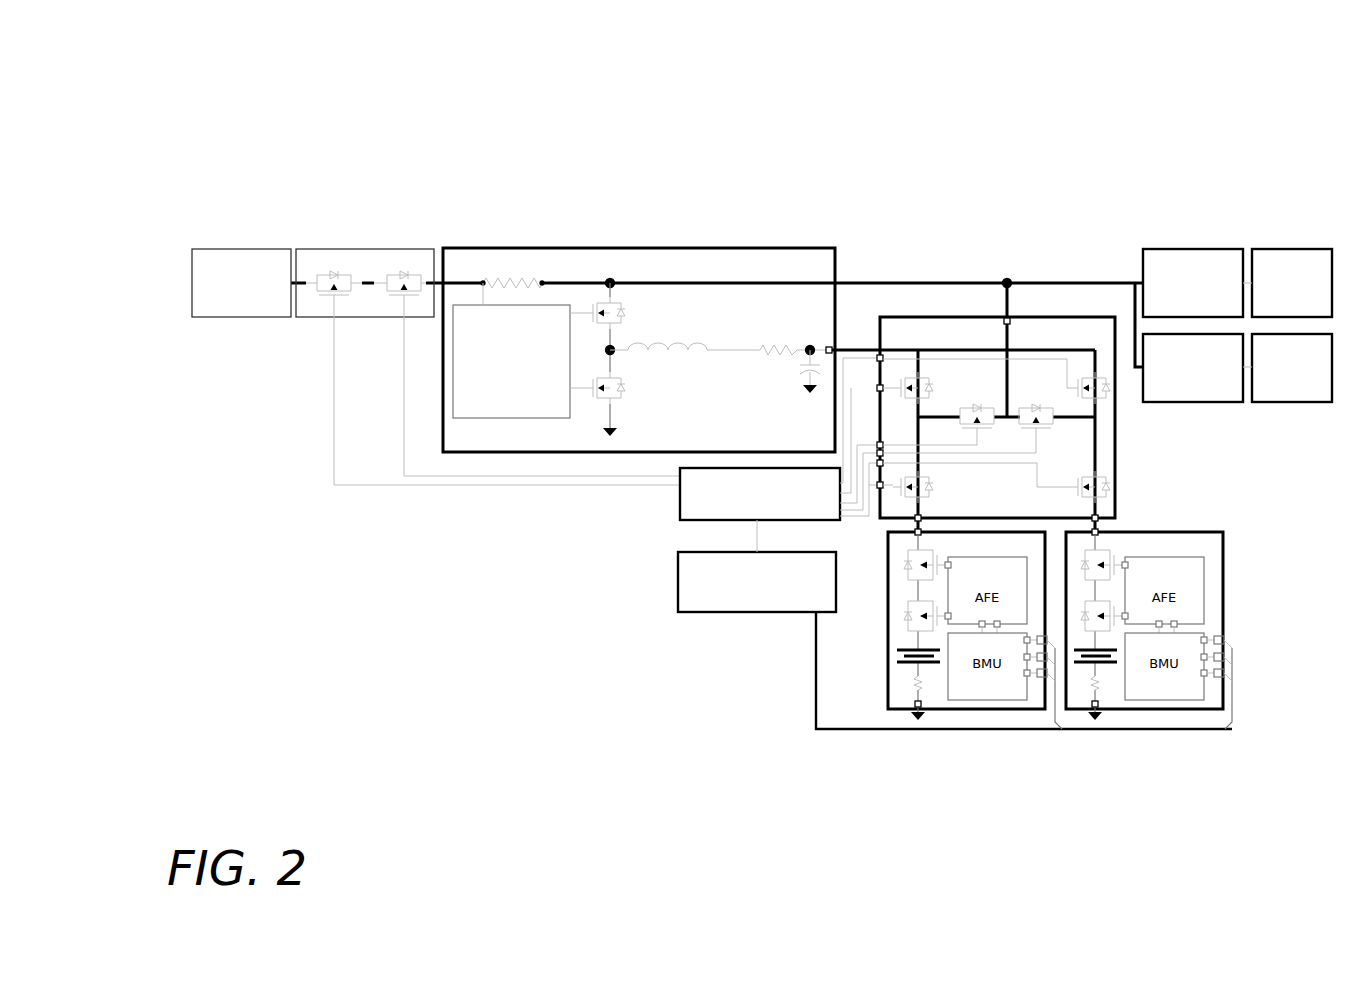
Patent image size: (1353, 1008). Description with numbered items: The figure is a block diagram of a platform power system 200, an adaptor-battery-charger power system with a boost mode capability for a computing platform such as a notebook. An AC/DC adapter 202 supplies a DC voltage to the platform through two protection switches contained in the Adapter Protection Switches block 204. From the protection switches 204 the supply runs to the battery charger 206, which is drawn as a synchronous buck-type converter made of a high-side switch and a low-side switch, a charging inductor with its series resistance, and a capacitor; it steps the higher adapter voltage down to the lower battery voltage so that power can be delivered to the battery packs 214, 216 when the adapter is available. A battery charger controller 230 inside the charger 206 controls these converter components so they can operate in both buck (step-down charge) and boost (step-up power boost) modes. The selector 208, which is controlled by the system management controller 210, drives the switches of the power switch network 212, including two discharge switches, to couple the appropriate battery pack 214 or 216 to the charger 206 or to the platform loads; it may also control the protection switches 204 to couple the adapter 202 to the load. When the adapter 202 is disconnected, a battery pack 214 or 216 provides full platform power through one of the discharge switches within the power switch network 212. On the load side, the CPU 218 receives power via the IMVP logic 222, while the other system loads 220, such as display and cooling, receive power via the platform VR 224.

The platform power system 200 is at (1173, 135).
The AC/DC adapter 202 is at (252, 249).
The Adapter Protection Switches (APS) 204 is at (352, 249).
The battery charger 206 is at (662, 248).
The selector 208 is at (780, 439).
The system management controller (SMC) 210 is at (955, 624).
The power switch (PS) network 212 is at (973, 406).
The battery pack 214 is at (971, 624).
The battery pack 216 is at (1149, 624).
The CPU/processor 218 is at (1287, 283).
The system loads 220 is at (1287, 368).
The IMVP logic 222 is at (1193, 283).
The platform VR 224 is at (1193, 368).
The battery charger controller 230 is at (511, 361).